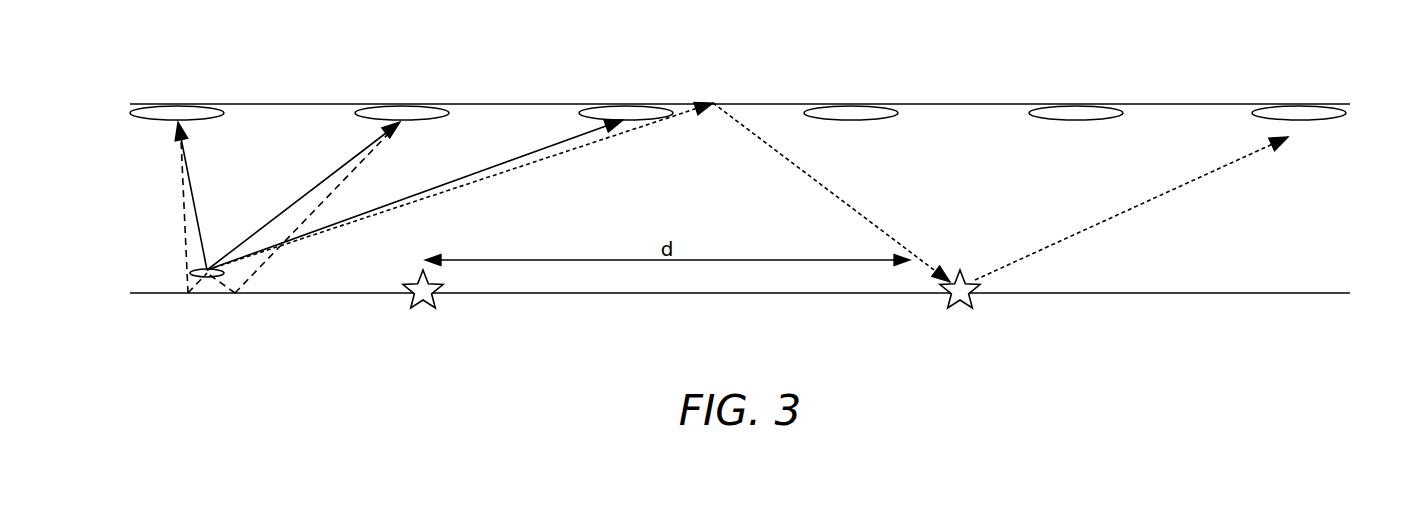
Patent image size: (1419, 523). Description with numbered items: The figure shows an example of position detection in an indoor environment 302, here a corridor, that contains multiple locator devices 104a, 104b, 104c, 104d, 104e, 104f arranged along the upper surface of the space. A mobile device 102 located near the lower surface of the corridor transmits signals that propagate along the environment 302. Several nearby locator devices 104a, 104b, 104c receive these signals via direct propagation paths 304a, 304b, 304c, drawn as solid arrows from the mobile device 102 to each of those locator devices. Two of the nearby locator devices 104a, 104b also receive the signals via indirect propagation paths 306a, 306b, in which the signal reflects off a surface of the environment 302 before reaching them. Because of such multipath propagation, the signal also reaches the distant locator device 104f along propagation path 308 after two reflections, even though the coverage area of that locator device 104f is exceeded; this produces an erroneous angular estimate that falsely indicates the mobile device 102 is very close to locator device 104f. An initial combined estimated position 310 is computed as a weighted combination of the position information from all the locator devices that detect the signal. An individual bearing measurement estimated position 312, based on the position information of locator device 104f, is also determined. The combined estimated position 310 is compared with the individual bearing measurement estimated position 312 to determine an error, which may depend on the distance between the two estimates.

The mobile device 102 is at (208, 279).
The locator device 104a is at (178, 112).
The locator device 104b is at (402, 112).
The locator device 104c is at (626, 112).
The locator device 104d is at (851, 112).
The locator device 104e is at (1076, 112).
The locator device 104f is at (1299, 112).
The environment/space 302 is at (1326, 207).
The direct propagation path 304a is at (186, 163).
The direct propagation path 304b is at (348, 160).
The direct propagation path 304c is at (530, 154).
The indirect propagation path 306a is at (185, 230).
The indirect propagation path 306b is at (327, 198).
The propagation path 308 is at (768, 146).
The initial combined estimated position 310 is at (423, 302).
The individual bearing measurement estimated position 312 is at (960, 302).